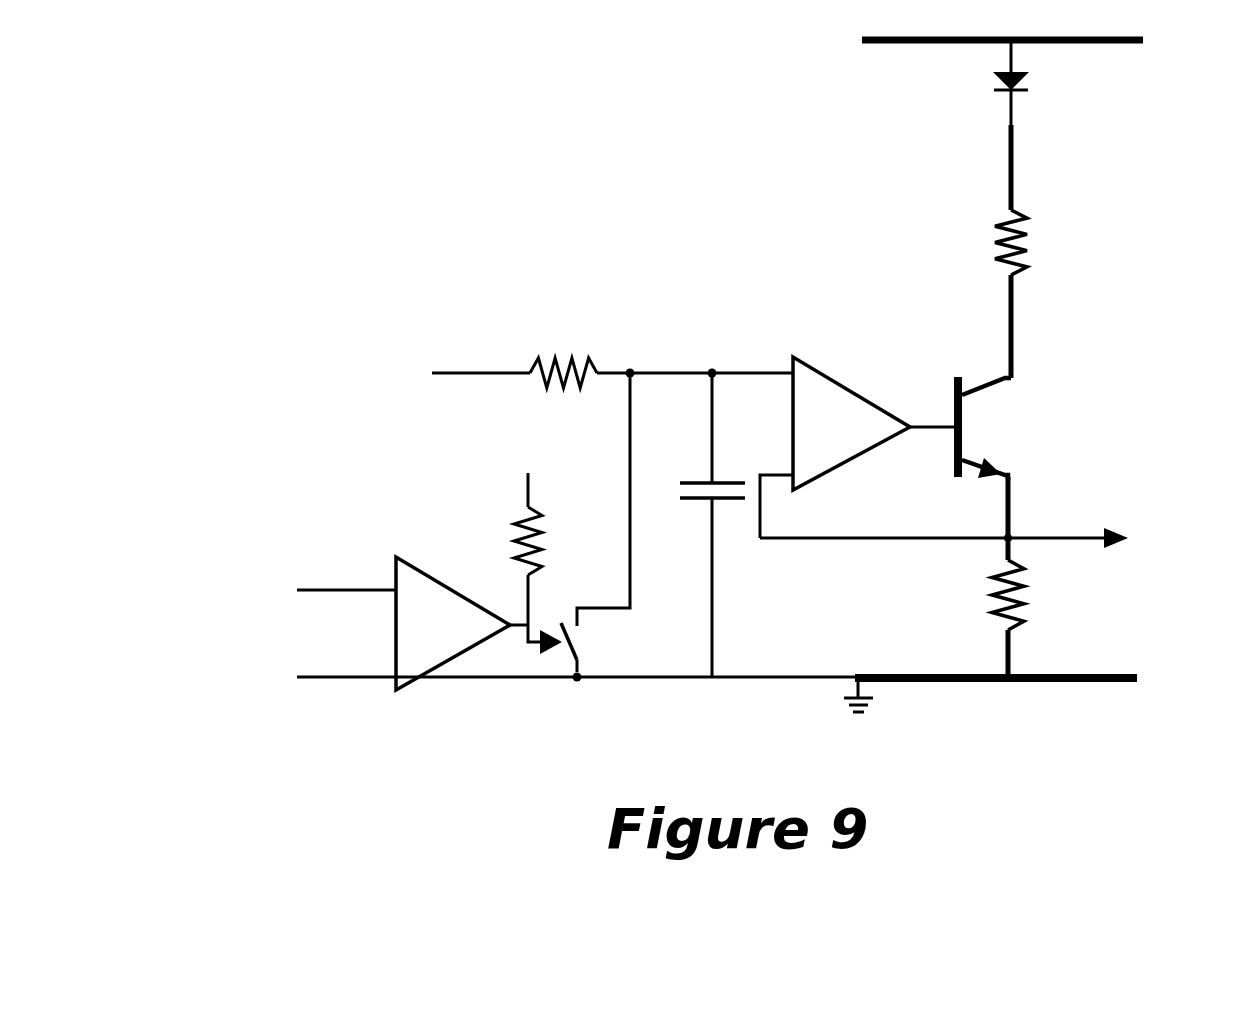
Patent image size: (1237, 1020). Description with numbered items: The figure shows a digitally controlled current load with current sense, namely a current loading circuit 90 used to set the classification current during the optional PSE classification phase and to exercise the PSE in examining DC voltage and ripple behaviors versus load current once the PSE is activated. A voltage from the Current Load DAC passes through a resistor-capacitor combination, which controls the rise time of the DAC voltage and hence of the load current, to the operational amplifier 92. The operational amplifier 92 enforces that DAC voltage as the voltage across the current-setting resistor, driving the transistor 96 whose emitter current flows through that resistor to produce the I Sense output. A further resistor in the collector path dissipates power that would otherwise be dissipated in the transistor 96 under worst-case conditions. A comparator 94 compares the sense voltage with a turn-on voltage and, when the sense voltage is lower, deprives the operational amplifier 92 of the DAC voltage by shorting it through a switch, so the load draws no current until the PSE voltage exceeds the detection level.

The current loading circuit 90 is at (692, 376).
The operational amplifier 92 is at (888, 402).
The comparator 94 is at (420, 580).
The transistor 96 is at (1063, 428).